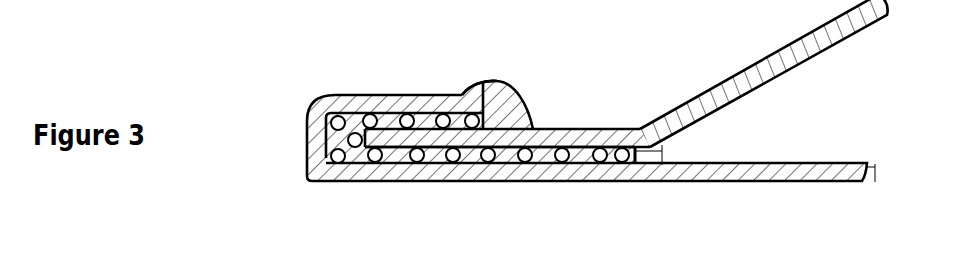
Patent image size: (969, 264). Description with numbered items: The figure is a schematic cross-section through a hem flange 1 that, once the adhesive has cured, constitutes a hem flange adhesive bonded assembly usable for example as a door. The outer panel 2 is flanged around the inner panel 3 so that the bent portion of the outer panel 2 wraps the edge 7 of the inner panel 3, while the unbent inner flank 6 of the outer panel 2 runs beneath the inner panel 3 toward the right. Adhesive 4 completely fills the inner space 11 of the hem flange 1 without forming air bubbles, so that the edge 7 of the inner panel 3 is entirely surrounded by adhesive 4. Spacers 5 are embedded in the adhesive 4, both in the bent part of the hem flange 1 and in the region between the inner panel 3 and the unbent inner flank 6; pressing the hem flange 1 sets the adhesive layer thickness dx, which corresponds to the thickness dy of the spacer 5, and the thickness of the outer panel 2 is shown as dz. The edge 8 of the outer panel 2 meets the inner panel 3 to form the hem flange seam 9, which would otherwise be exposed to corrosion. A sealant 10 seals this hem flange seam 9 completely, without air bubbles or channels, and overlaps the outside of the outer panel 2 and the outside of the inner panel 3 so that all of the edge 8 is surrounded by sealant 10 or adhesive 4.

The hem flange 1 is at (299, 98).
The outer panel 2 is at (346, 164).
The inner panel 3 is at (782, 62).
The adhesive 4 is at (630, 155).
The spacer 5 is at (488, 158).
The unbent inner flank of the outer panel 6 is at (380, 161).
The edge of the inner panel 7 is at (348, 139).
The edge of the outer panel 8 is at (510, 85).
The hem flange seam 9 is at (520, 110).
The sealant 10 is at (487, 80).
The inner space of the hem flange 11 is at (348, 122).
The adhesive layer thickness dx is at (657, 153).
The thickness of the spacer dy is at (630, 153).
The thickness of the outer panel dz is at (878, 168).